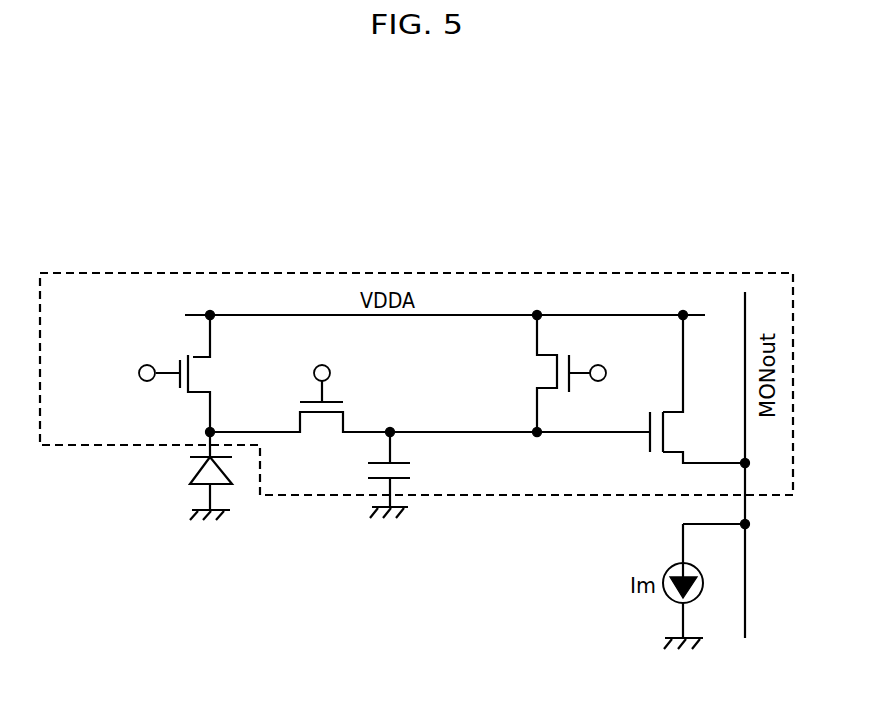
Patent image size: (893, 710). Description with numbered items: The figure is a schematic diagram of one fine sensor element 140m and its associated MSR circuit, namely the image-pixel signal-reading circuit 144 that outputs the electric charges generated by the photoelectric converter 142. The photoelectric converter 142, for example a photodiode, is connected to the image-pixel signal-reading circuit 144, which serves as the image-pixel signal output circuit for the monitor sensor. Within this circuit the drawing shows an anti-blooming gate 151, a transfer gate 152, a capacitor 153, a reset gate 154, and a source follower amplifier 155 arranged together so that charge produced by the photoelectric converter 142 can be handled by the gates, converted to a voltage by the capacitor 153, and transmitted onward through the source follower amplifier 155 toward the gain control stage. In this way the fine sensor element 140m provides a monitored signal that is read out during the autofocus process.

The fine sensor element 140m is at (155, 250).
The image-pixel signal-reading circuit 144 is at (412, 273).
The photoelectric converter 142 is at (205, 485).
The anti-blooming gate 151 is at (172, 392).
The transfer gate 152 is at (335, 400).
The capacitor 153 is at (378, 460).
The reset gate 154 is at (576, 389).
The source follower amplifier 155 is at (650, 442).